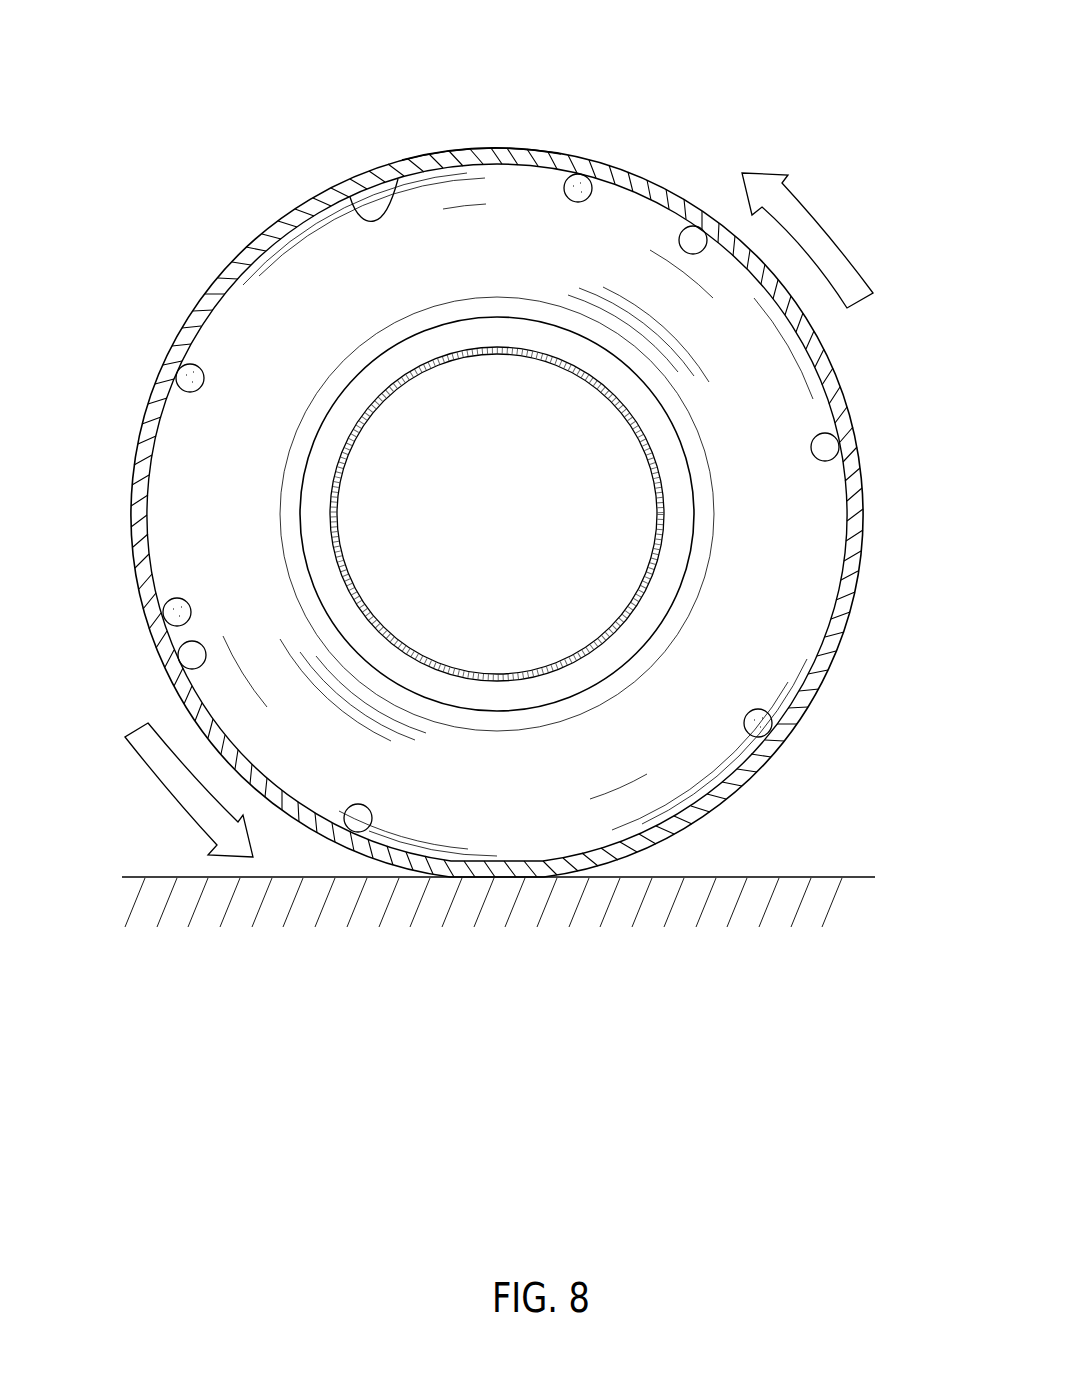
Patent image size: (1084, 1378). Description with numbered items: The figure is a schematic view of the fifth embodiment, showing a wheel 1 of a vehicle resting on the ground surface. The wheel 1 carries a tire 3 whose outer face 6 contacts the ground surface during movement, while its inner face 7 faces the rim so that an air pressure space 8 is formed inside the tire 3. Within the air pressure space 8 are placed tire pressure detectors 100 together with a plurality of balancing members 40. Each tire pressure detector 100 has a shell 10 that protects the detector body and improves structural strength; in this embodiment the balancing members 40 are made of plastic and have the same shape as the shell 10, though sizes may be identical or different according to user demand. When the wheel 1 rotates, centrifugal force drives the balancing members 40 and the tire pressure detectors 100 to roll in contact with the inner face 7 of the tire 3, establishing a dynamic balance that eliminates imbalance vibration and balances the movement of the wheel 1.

The wheel 1 is at (636, 172).
The tire 3 is at (422, 42).
The outer face 6 is at (452, 152).
The inner face 7 is at (357, 192).
The air pressure space 8 is at (223, 332).
The shell 10 is at (772, 710).
The balancing member 40 is at (692, 228).
The tire pressure detector 100 is at (160, 380).